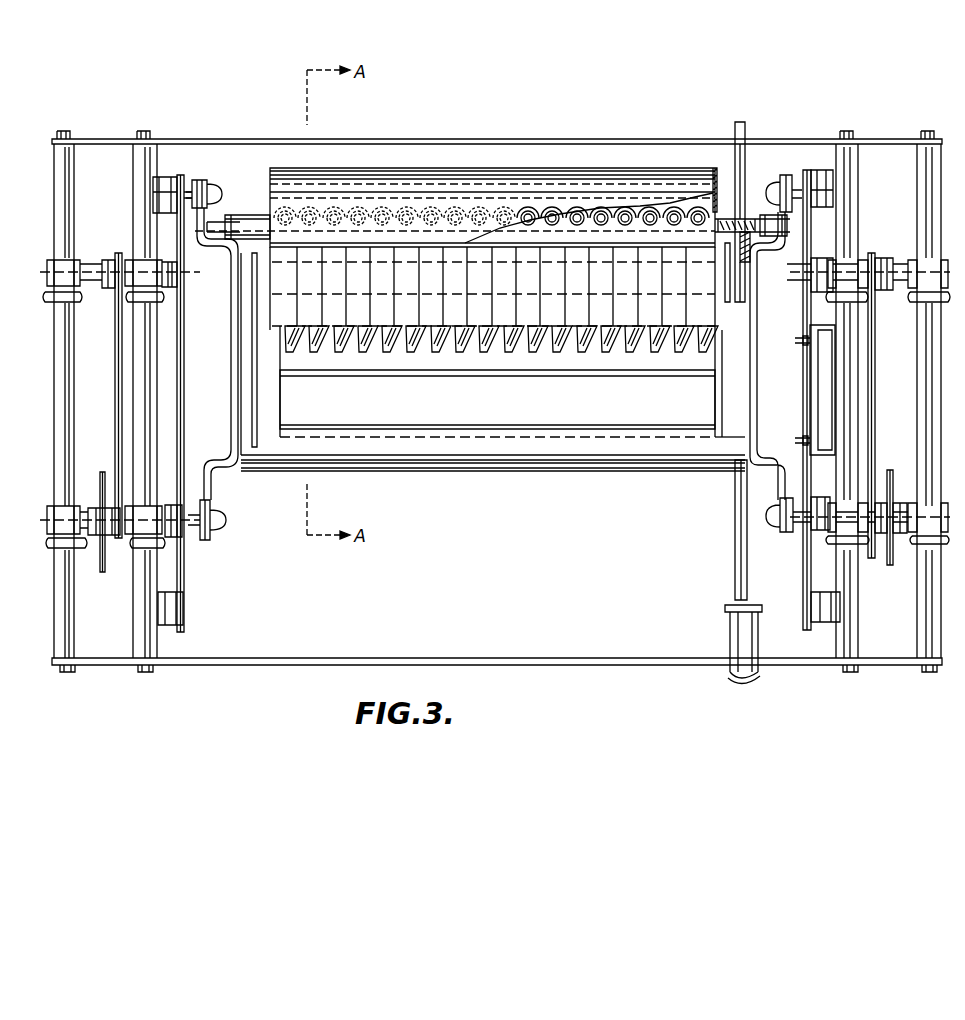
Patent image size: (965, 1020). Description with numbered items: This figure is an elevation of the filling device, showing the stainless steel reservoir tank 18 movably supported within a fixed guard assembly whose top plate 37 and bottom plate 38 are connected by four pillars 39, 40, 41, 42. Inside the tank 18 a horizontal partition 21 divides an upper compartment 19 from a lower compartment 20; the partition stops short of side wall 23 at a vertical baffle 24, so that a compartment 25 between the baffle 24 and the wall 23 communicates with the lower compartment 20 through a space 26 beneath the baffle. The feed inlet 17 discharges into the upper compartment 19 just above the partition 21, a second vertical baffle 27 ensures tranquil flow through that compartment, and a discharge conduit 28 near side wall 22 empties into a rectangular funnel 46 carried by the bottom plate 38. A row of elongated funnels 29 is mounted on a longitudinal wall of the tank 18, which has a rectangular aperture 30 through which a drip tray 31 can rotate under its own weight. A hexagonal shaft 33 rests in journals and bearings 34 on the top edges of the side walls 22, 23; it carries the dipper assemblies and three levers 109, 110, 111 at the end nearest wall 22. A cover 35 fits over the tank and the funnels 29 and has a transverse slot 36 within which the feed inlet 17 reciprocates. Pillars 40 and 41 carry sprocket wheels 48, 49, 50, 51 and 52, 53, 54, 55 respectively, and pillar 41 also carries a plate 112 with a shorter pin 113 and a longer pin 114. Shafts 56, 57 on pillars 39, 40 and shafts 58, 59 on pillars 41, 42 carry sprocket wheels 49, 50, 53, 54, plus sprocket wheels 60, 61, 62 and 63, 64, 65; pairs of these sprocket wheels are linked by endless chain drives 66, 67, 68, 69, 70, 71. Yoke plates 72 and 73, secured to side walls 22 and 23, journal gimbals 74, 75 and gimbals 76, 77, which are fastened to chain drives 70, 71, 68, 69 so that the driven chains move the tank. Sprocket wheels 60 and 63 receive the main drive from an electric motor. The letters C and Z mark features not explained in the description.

The feed inlet 17 is at (746, 125).
The reservoir tank 18 is at (528, 471).
The upper compartment 19 is at (731, 399).
The lower compartment 20 is at (728, 396).
The horizontal partition 21 is at (742, 320).
The side wall 22 is at (757, 350).
The side wall 23 is at (240, 360).
The vertical baffle 24 is at (252, 383).
The compartment 25 is at (242, 337).
The space 26 is at (260, 470).
The second vertical baffle 27 is at (722, 292).
The discharge conduit 28 is at (735, 516).
The elongated funnels 29 is at (382, 336).
The rectangular aperture 30 is at (447, 437).
The drip tray 31 is at (713, 405).
The hexagonal shaft 33 is at (218, 216).
The journals and bearings 34 is at (244, 215).
The cover 35 is at (512, 168).
The transverse slot 36 is at (746, 232).
The top plate 37 is at (450, 139).
The bottom plate 38 is at (345, 660).
The pillar 39 is at (74, 333).
The pillar 40 is at (137, 352).
The pillar 41 is at (848, 343).
The pillar 42 is at (920, 393).
The funnel 46 is at (729, 625).
The sprocket wheel 48 is at (186, 606).
The sprocket wheel 49 is at (175, 505).
The sprocket wheel 50 is at (176, 288).
The sprocket wheel 51 is at (168, 178).
The sprocket wheel 52 is at (815, 606).
The sprocket wheel 53 is at (820, 497).
The sprocket wheel 54 is at (820, 292).
The sprocket wheel 55 is at (826, 170).
The shaft 56 is at (123, 538).
The shaft 57 is at (103, 286).
The shaft 58 is at (870, 548).
The shaft 59 is at (902, 262).
The sprocket wheel 60 is at (100, 548).
The sprocket wheel 61 is at (113, 505).
The sprocket wheel 62 is at (110, 260).
The sprocket wheel 63 is at (895, 556).
The sprocket wheel 64 is at (882, 500).
The sprocket wheel 65 is at (880, 290).
The endless chain drive 66 is at (115, 380).
The endless chain drive 67 is at (877, 368).
The endless chain drive 68 is at (186, 567).
The endless chain drive 69 is at (192, 254).
The endless chain drive 70 is at (803, 557).
The endless chain drive 71 is at (791, 278).
The yoke plate 72 is at (758, 410).
The yoke plate 73 is at (232, 412).
The gimbal 74 is at (776, 510).
The gimbal 75 is at (786, 175).
The gimbal 76 is at (220, 512).
The gimbal 77 is at (212, 186).
The lever 109 is at (786, 240).
The lever 110 is at (820, 170).
The lever 111 is at (782, 220).
The plate 112 is at (815, 360).
The pin 113 is at (800, 339).
The pin 114 is at (800, 441).
The cards C is at (697, 214).
The direction arrow Z is at (838, 214).